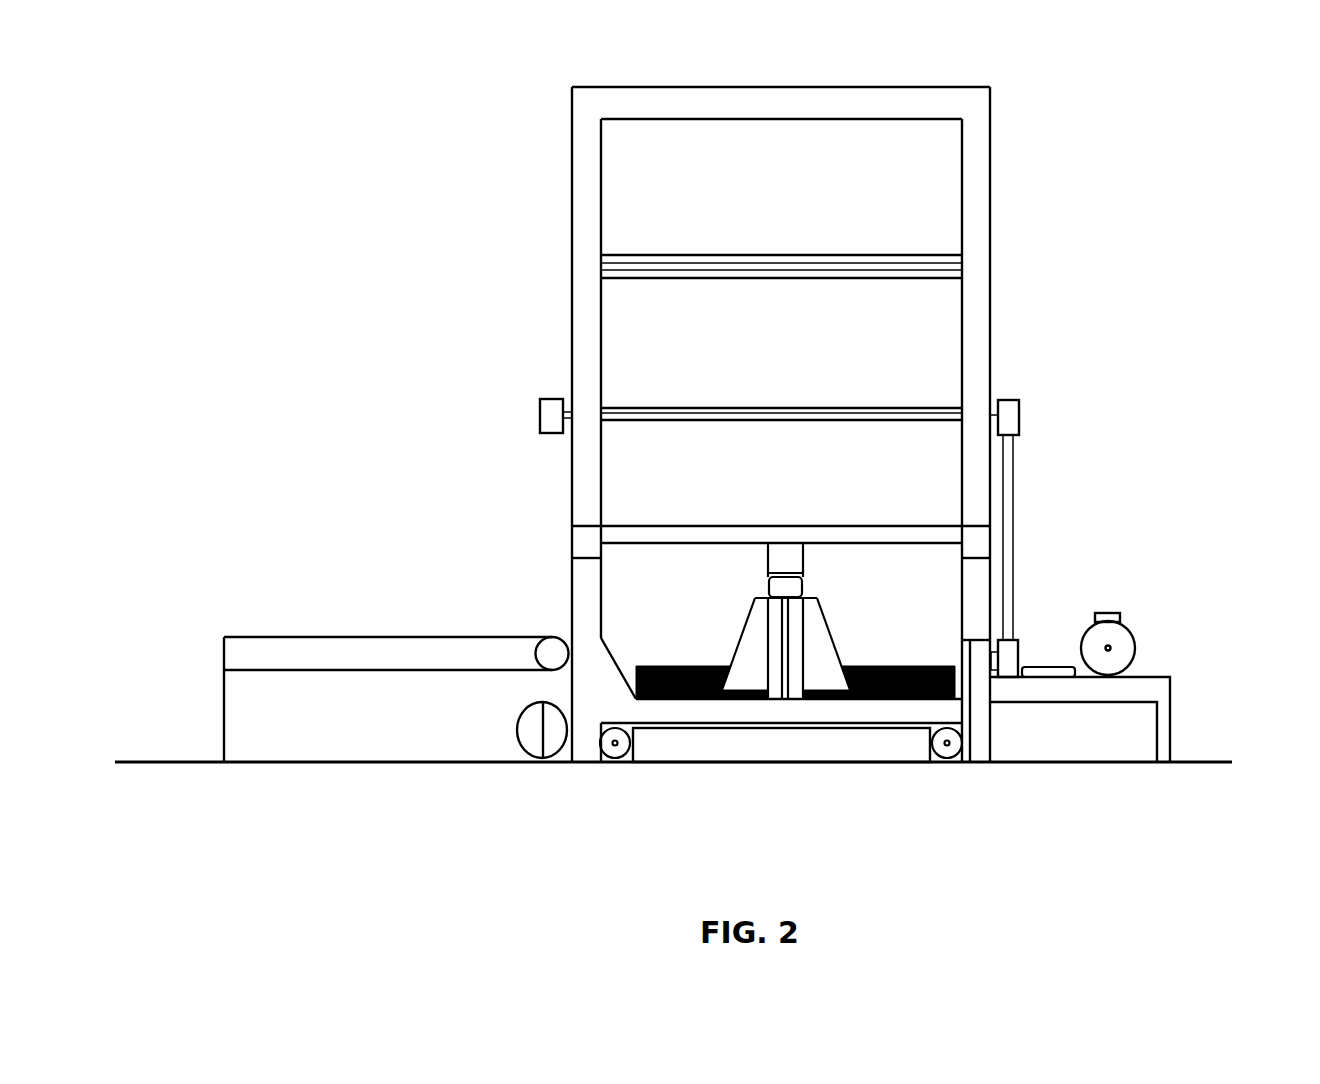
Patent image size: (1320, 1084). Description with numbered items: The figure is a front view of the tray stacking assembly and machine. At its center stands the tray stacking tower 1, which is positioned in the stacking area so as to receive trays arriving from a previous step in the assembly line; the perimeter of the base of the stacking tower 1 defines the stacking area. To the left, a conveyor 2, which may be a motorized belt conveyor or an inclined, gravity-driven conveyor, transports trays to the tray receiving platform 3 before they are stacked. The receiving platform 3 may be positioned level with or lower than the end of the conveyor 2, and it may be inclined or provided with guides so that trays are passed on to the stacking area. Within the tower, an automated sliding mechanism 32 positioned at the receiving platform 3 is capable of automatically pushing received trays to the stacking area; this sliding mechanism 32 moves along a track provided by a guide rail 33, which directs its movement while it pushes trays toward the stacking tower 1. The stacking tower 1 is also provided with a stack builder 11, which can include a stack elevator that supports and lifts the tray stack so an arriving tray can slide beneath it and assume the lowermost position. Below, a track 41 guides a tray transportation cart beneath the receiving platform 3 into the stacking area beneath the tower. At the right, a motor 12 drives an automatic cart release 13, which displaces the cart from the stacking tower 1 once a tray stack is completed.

The tray stacking tower 1 is at (855, 424).
The conveyor 2 is at (396, 646).
The tray receiving platform 3 is at (897, 802).
The stack builder 11 is at (818, 483).
The motor 12 is at (1191, 621).
The automatic cart release 13 is at (1105, 540).
The automated sliding mechanism 32 is at (659, 551).
The guide rail 33 is at (618, 486).
The track 41 is at (781, 802).